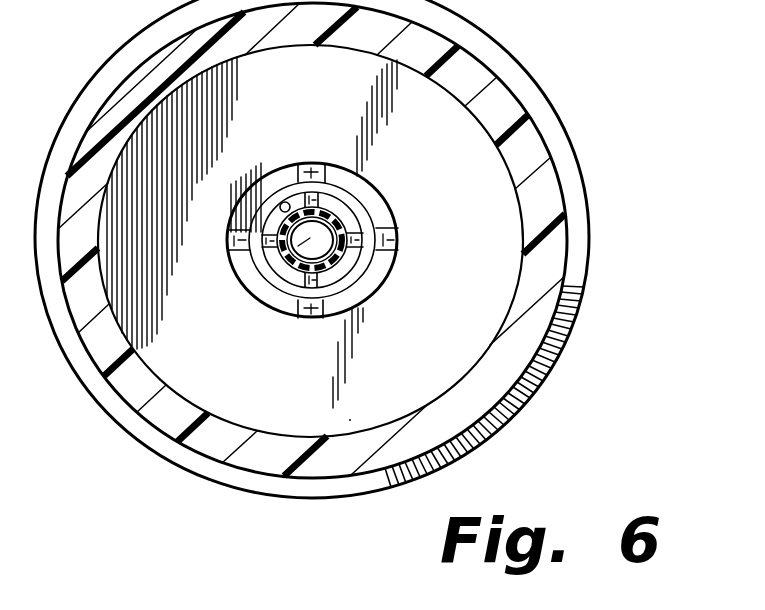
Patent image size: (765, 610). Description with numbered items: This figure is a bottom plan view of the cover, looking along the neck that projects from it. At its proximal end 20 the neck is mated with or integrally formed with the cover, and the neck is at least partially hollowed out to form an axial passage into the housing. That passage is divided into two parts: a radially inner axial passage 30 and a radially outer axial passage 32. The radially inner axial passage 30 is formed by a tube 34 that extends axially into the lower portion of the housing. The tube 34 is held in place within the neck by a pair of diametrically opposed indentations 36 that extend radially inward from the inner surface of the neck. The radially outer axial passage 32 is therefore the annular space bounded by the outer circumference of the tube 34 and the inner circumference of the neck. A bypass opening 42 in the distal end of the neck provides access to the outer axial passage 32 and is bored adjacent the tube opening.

The proximal end 20 is at (400, 220).
The radially inner axial passage 30 is at (258, 274).
The radially outer axial passage 32 is at (345, 213).
The tube 34 is at (300, 275).
The indentations 36 is at (352, 187).
The bypass opening 42 is at (285, 201).